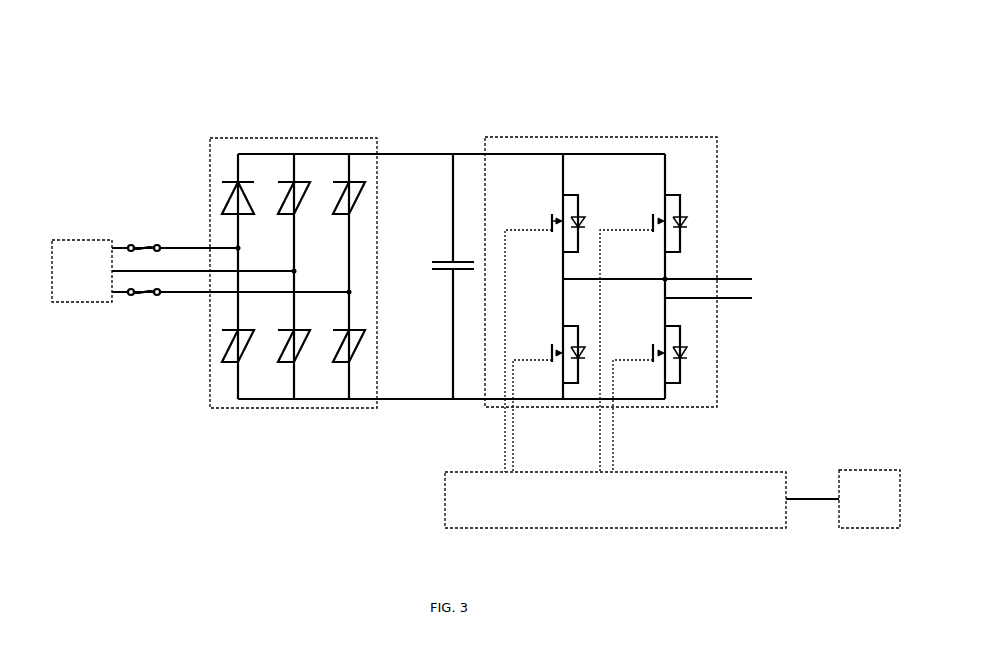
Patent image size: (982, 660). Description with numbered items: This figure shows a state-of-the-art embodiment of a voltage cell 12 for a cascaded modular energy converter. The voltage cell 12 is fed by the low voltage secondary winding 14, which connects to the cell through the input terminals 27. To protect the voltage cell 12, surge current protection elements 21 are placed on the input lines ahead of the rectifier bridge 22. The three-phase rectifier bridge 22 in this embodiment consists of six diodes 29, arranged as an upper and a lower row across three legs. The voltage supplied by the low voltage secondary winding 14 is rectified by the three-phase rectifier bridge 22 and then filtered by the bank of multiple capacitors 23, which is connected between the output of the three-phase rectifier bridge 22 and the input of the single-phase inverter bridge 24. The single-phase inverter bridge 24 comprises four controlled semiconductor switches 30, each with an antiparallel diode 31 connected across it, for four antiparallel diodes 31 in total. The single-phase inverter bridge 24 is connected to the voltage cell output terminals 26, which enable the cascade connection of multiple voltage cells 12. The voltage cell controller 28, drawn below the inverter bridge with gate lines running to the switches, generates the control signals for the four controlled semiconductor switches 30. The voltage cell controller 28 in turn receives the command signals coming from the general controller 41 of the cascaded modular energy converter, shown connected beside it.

The voltage cell 12 is at (193, 87).
The low voltage secondary winding 14 is at (70, 240).
The surge current protection elements 21 is at (145, 240).
The three-phase rectifier bridge 22 is at (210, 138).
The bank of multiple capacitors 23 is at (447, 260).
The single-phase inverter bridge 24 is at (645, 137).
The voltage cell output terminals 26 is at (755, 290).
The input terminals 27 is at (125, 300).
The voltage cell controller 28 is at (450, 473).
The diodes 29 is at (222, 195).
The controlled semiconductor switches 30 is at (545, 218).
The antiparallel diodes 31 is at (578, 210).
The general controller 41 is at (857, 470).